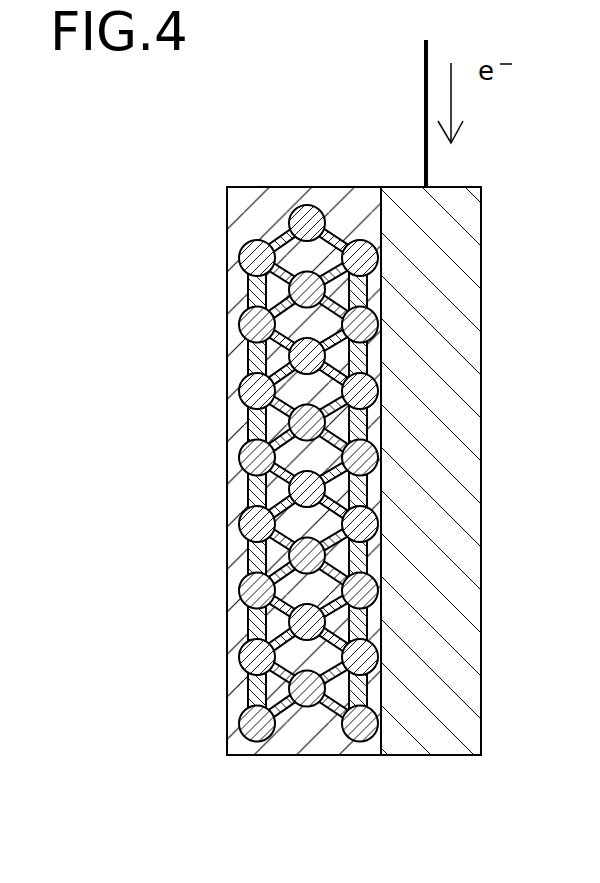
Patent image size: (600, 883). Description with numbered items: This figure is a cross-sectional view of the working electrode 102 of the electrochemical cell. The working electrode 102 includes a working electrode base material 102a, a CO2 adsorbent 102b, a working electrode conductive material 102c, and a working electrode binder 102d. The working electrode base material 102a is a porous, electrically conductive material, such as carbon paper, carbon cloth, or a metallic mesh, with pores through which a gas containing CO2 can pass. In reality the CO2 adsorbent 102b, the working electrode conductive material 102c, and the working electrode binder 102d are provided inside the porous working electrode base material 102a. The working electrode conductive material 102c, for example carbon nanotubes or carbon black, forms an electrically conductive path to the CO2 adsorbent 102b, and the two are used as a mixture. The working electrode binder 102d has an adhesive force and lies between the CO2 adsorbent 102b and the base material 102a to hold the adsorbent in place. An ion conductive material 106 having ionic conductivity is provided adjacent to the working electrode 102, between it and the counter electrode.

The working electrode 102 is at (265, 461).
The working electrode base material 102a is at (418, 748).
The CO2 adsorbent 102b is at (240, 255).
The working electrode conductive material 102c is at (247, 300).
The working electrode binder 102d is at (206, 473).
The ion conductive material 106 is at (292, 748).